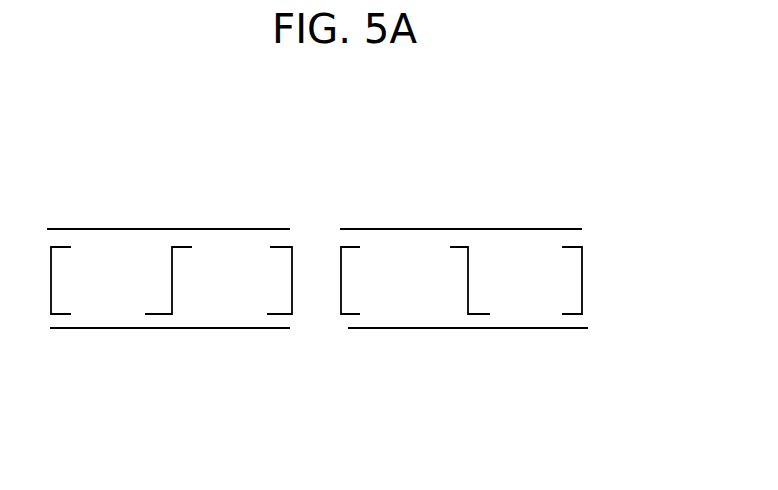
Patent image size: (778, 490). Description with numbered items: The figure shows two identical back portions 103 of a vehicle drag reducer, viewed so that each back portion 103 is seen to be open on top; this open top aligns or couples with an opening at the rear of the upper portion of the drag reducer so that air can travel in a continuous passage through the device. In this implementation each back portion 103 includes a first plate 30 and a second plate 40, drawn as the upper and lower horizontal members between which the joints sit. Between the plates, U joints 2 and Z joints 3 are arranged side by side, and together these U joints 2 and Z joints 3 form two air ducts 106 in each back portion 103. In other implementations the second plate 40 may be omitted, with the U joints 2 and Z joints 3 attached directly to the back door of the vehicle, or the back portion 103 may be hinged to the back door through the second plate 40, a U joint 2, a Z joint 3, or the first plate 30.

The U joint 2 is at (63, 316).
The Z joint 3 is at (172, 288).
The first plate 30 is at (387, 233).
The second plate 40 is at (278, 328).
The back portion 103 is at (214, 172).
The air duct 106 is at (213, 288).